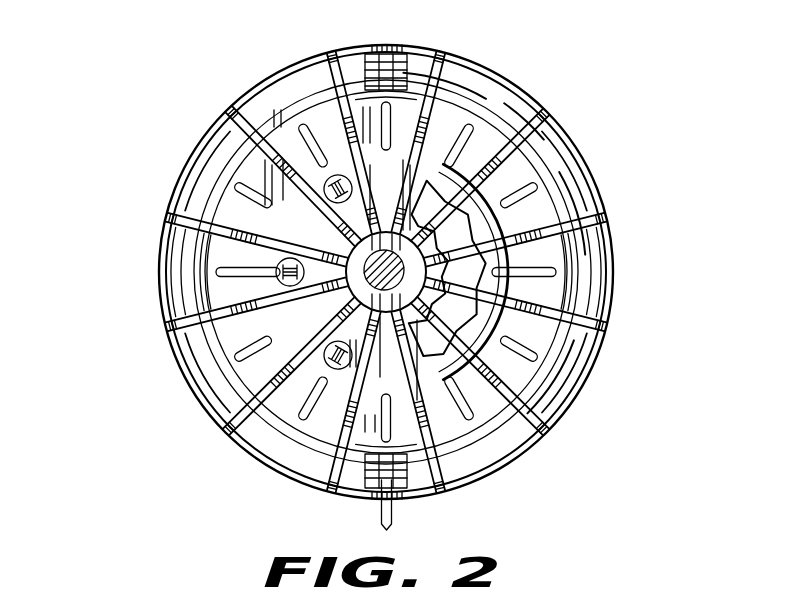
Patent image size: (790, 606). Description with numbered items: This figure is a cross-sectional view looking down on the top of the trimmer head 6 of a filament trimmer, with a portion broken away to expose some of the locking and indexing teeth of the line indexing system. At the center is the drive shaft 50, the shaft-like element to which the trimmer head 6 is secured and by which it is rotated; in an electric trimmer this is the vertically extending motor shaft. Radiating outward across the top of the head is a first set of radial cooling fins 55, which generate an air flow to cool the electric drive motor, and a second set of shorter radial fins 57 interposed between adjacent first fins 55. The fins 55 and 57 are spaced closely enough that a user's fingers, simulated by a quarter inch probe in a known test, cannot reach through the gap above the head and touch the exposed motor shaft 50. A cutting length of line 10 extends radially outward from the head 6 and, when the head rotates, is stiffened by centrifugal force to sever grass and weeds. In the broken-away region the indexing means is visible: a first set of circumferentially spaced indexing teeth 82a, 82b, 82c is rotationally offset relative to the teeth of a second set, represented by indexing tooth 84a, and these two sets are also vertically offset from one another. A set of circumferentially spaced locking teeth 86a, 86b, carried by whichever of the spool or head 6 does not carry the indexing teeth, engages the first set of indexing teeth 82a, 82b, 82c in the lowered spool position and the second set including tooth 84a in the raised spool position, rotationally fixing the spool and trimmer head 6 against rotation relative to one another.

The trimmer head 6 is at (243, 76).
The cutting length of line 10 is at (395, 518).
The drive shaft 50 is at (185, 217).
The first set of radial cooling fins 55 is at (177, 350).
The second set of radial fins 57 is at (213, 413).
The indexing tooth 82a is at (575, 385).
The indexing tooth 82b is at (590, 236).
The indexing tooth 82c is at (450, 85).
The indexing tooth 84a is at (510, 175).
The locking tooth 86a is at (565, 285).
The locking tooth 86b is at (520, 115).